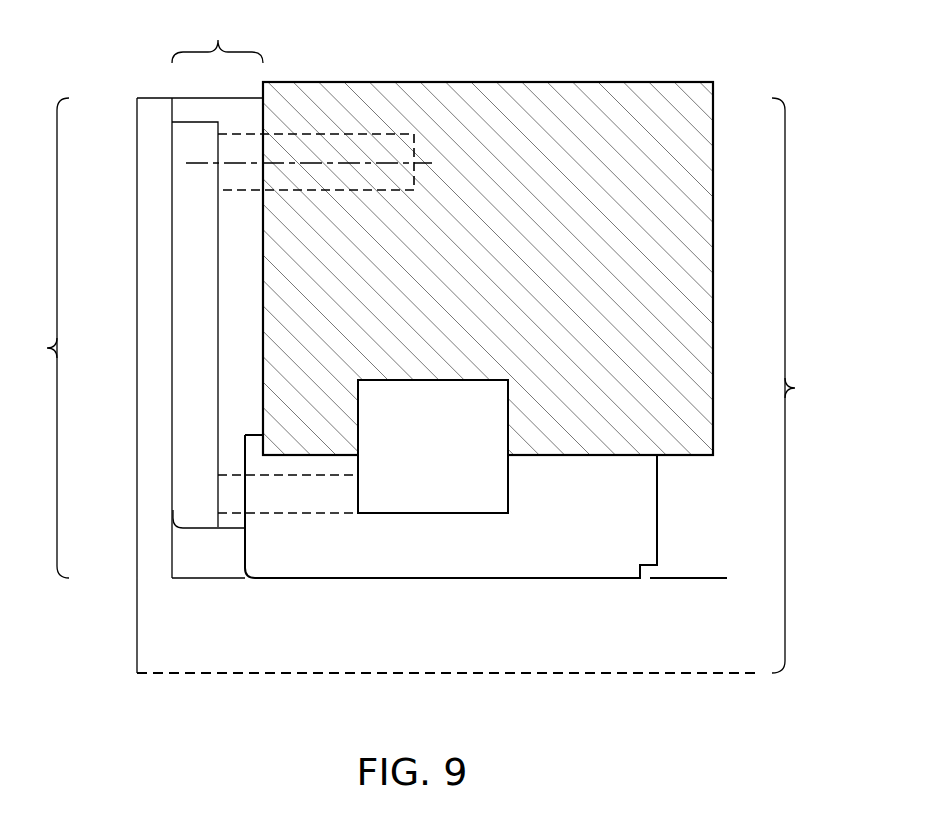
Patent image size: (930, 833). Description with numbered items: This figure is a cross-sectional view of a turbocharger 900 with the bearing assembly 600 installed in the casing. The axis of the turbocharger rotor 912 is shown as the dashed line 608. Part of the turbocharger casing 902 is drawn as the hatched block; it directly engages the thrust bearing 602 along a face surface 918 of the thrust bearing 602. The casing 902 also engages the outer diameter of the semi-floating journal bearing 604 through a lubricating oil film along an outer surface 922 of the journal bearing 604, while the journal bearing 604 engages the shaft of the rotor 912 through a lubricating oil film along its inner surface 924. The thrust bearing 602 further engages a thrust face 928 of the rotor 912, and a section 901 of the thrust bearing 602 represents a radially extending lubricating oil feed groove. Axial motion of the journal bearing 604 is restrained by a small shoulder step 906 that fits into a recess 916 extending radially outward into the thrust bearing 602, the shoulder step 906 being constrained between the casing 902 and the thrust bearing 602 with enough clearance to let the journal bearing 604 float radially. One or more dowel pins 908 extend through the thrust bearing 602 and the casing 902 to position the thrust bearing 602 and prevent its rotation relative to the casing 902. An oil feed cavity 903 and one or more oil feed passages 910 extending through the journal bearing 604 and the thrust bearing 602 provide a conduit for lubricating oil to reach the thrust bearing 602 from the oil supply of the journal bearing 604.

The bearing assembly 600 is at (35, 338).
The thrust bearing 602 is at (217, 38).
The semi-floating journal bearing 604 is at (596, 498).
The axis of the turbocharger rotor 608 is at (232, 675).
The turbocharger 900 is at (807, 385).
The lubricating oil feed groove 901 is at (190, 192).
The turbocharger casing 902 is at (672, 105).
The oil feed cavity 903 is at (460, 395).
The shoulder step 906 is at (268, 445).
The dowel pin 908 is at (368, 198).
The oil feed passage 910 is at (302, 514).
The turbocharger rotor 912 is at (670, 605).
The recess 916 is at (255, 452).
The face surface 918 is at (267, 317).
The outer surface 922 is at (573, 449).
The inner surface 924 is at (475, 578).
The thrust face 928 is at (153, 247).